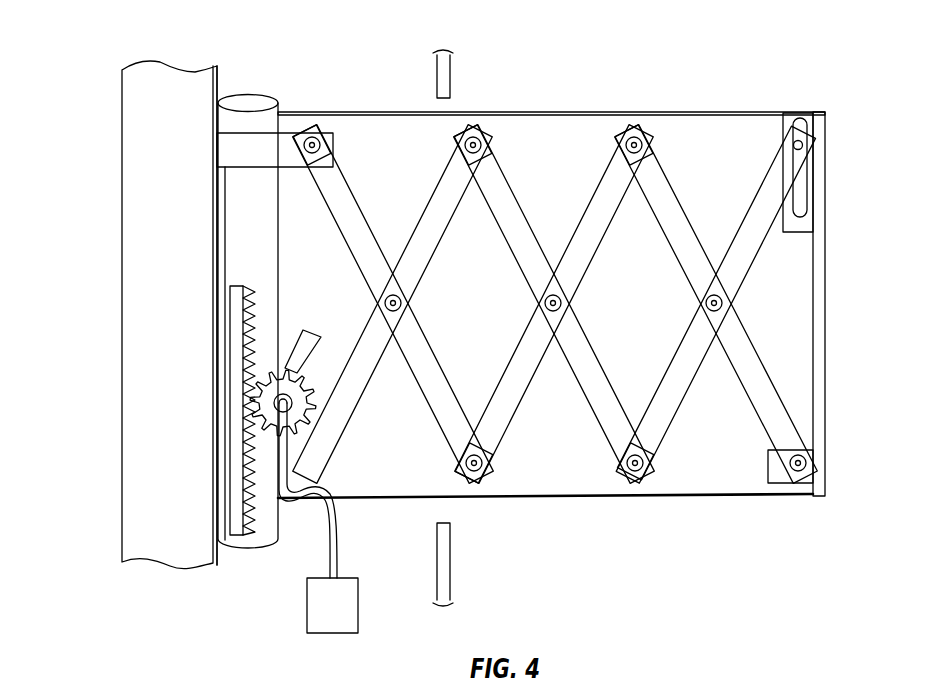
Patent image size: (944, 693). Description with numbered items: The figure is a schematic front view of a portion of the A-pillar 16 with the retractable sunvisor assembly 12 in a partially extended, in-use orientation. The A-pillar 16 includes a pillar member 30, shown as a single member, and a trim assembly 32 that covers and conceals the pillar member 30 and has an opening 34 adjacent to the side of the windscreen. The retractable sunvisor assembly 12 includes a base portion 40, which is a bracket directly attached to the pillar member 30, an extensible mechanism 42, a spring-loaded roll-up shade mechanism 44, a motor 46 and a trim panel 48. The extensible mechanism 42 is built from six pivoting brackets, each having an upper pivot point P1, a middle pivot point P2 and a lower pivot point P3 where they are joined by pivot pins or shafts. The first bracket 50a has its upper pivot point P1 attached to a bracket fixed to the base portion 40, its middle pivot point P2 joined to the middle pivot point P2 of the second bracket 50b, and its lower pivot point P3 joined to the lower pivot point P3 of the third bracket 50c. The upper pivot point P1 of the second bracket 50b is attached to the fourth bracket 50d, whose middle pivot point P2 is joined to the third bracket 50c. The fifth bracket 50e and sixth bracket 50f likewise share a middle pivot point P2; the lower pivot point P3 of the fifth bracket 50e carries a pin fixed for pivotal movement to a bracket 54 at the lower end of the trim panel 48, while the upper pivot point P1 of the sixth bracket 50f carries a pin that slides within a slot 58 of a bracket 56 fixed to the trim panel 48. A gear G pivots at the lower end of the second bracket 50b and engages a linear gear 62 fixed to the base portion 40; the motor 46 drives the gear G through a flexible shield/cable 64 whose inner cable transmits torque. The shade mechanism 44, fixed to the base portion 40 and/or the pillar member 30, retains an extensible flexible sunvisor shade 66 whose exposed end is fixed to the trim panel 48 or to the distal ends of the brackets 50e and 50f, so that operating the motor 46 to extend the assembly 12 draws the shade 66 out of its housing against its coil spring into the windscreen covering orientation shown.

The retractable sunvisor assembly 12 is at (584, 314).
The A-pillar 16 is at (141, 293).
The pillar member 30 is at (168, 82).
The trim assembly 32 is at (452, 66).
The opening 34 is at (445, 523).
The base portion 40 is at (212, 248).
The extensible mechanism 42 is at (582, 303).
The spring-loaded roll-up shade mechanism 44 is at (245, 102).
The motor 46 is at (316, 600).
The trim panel 48 is at (828, 236).
The first bracket 50a is at (372, 236).
The second bracket 50b is at (445, 210).
The third bracket 50c is at (607, 208).
The fourth bracket 50d is at (527, 243).
The fifth bracket 50e is at (683, 233).
The sixth bracket 50f is at (745, 260).
The bracket 54 is at (775, 484).
The bracket 56 is at (830, 172).
The slot 58 is at (802, 200).
The linear gear 62 is at (253, 308).
The flexible shield/cable 64 is at (338, 548).
The extensible flexible sunvisor shade 66 is at (760, 128).
The gear G is at (322, 328).
The upper pivot point P1 is at (322, 142).
The middle pivot point P2 is at (402, 302).
The lower pivot point P3 is at (483, 462).